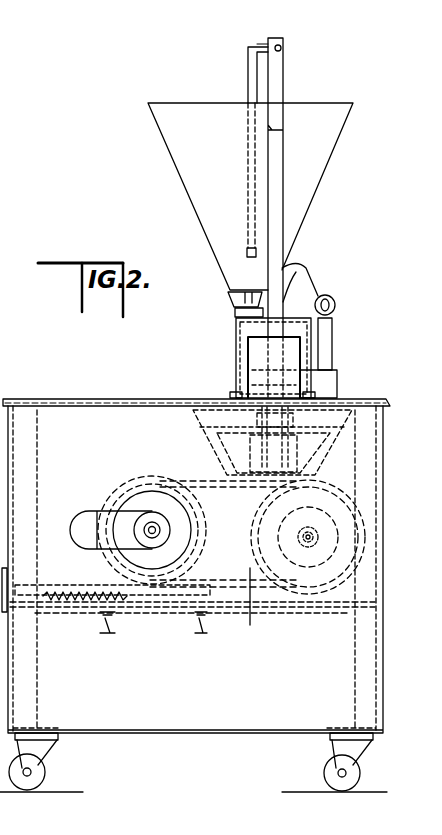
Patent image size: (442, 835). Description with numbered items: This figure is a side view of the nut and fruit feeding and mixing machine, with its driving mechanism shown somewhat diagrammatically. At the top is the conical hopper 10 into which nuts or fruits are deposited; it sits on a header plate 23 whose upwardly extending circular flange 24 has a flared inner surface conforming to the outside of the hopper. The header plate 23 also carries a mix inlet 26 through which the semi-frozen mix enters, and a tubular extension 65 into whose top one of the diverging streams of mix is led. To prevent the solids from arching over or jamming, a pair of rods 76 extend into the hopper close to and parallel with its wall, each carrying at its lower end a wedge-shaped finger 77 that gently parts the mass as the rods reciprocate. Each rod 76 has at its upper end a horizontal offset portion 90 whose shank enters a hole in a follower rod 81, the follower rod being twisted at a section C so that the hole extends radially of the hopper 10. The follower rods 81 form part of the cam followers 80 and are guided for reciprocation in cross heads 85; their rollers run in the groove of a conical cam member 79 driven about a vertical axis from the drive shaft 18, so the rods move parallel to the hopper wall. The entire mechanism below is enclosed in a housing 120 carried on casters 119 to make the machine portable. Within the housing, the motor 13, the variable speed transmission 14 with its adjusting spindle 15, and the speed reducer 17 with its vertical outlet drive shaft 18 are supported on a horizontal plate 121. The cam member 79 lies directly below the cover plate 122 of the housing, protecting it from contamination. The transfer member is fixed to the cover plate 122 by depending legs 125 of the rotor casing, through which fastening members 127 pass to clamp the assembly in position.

The conical hopper 10 is at (340, 138).
The motor 13 is at (97, 552).
The variable speed transmission 14 is at (115, 565).
The adjusting or control spindle 15 is at (70, 602).
The speed reducer 17 is at (260, 606).
The vertical outlet drive shaft 18 is at (275, 500).
The header plate 23 is at (235, 314).
The circular flange 24 is at (228, 296).
The mix inlet 26 is at (312, 270).
The tubular extension 65 is at (336, 303).
The rods 76 is at (248, 68).
The fingers 77 is at (247, 252).
The conical cam member 79 is at (200, 432).
The cam followers 80 is at (283, 228).
The follower rods 81 is at (283, 162).
The cross heads 85 is at (248, 352).
The offset portion 90 is at (262, 45).
The casters 119 is at (32, 790).
The housing 120 is at (183, 725).
The plate 121 is at (160, 605).
The cover plate 122 is at (97, 399).
The depending legs 125 is at (338, 378).
The fastening members 127 is at (334, 340).
The twisted section C is at (283, 131).